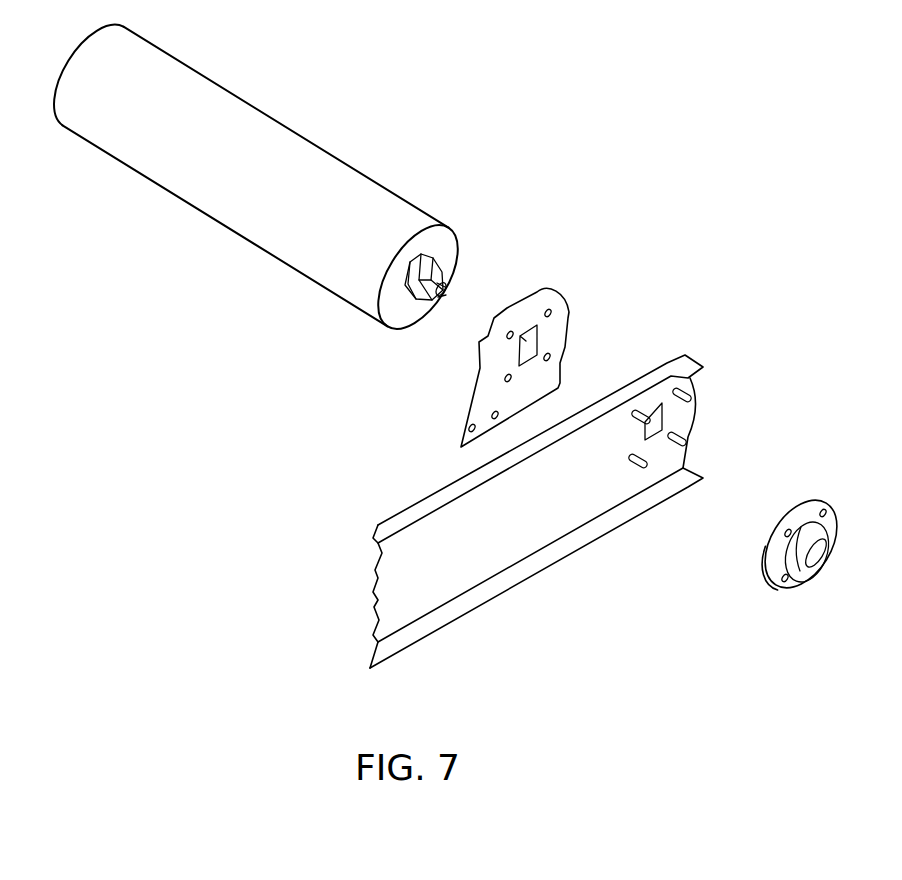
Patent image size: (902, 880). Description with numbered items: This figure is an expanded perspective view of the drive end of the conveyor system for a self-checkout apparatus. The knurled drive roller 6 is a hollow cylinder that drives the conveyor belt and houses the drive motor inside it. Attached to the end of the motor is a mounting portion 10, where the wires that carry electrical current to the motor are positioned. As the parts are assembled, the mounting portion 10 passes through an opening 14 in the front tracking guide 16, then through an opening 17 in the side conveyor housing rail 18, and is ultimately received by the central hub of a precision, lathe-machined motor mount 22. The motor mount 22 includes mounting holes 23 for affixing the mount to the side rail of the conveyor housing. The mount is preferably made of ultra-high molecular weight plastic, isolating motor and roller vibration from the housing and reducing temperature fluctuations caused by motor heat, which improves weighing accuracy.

The drive roller 6 is at (398, 334).
The mounting portion 10 is at (443, 261).
The opening 14 is at (530, 333).
The front tracking guide 16 is at (575, 311).
The opening 17 is at (657, 421).
The side conveyor housing rail 18 is at (594, 554).
The motor mount 22 is at (831, 548).
The mounting holes 23 is at (824, 510).